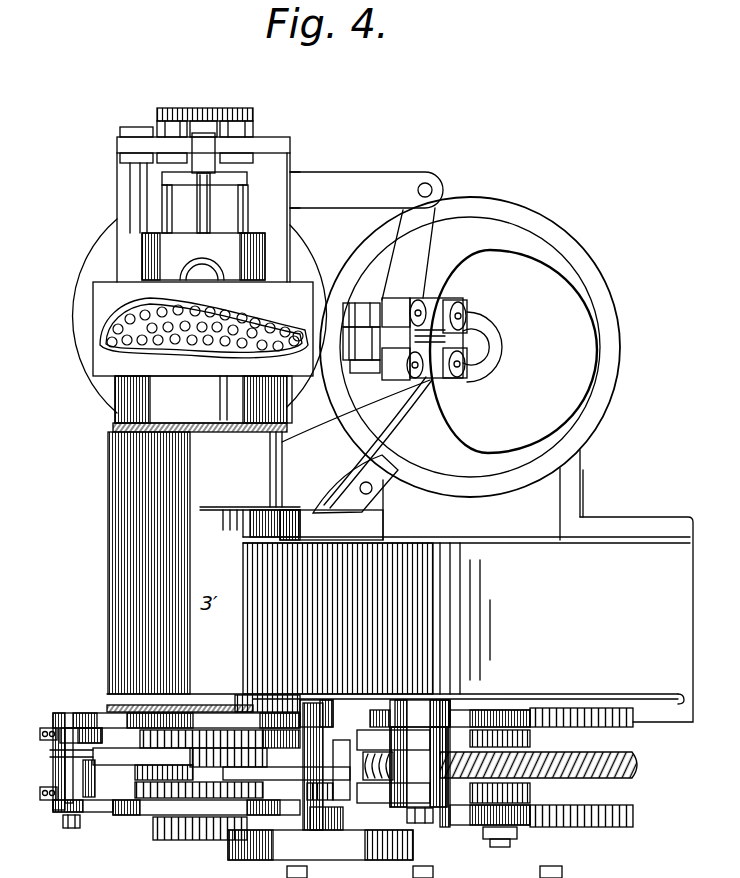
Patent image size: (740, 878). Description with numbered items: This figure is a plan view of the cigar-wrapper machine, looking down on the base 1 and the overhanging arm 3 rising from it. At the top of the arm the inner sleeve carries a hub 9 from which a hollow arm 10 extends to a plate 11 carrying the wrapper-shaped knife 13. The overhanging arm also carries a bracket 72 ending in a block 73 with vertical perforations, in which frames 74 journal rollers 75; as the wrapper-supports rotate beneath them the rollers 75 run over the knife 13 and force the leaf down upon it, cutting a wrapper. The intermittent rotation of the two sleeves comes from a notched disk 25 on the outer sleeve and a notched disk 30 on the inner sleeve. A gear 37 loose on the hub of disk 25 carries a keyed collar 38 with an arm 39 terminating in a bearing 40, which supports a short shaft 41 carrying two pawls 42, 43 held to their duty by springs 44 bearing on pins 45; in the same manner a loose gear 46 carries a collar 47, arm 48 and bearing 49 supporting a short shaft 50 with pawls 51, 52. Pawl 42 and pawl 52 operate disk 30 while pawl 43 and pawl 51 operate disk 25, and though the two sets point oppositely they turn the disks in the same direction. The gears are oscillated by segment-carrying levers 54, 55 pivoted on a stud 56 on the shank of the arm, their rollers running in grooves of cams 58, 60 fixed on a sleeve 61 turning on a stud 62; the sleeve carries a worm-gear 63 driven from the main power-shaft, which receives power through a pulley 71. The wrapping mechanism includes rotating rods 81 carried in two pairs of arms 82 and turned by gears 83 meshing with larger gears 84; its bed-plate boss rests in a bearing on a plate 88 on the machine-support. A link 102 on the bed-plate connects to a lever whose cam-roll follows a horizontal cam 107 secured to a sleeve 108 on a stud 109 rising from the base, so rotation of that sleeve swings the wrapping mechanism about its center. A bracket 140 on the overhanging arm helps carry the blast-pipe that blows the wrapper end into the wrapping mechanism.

The base 1 is at (690, 614).
The overhanging arm 3 is at (408, 545).
The hub 9 is at (252, 250).
The hollow arm 10 is at (200, 266).
The plate 11 is at (100, 364).
The knife 13 is at (232, 318).
The notched disk 25 is at (232, 720).
The notched disk 30 is at (185, 815).
The gear 37 is at (146, 740).
The collar 38 is at (180, 757).
The arm 39 is at (60, 756).
The bearing 40 is at (74, 761).
The short shaft 41 is at (74, 828).
The pawl 42 is at (95, 812).
The pawl 43 is at (80, 718).
The springs 44 is at (60, 733).
The pins 45 is at (97, 728).
The loose gear 46 is at (137, 790).
The collar 47 is at (137, 772).
The arm 48 is at (280, 775).
The bearing 49 is at (326, 766).
The short shaft 50 is at (335, 816).
The pawl 51 is at (345, 713).
The pawl 52 is at (323, 792).
The segment-carrying lever 54 is at (393, 739).
The segment-carrying lever 55 is at (393, 790).
The stud 56 is at (420, 824).
The cam 58 is at (605, 828).
The cam 60 is at (633, 725).
The sleeve 61 is at (528, 750).
The stud 62 is at (502, 848).
The worm-gear 63 is at (640, 765).
The pulley 71 is at (320, 845).
The bracket 72 is at (357, 445).
The block 73 is at (440, 318).
The frames 74 is at (372, 302).
The rollers 75 is at (352, 345).
The rotating rods 81 is at (160, 208).
The arms 82 is at (248, 182).
The gears 83 is at (180, 110).
The gears 84 is at (205, 108).
The plate 88 is at (100, 256).
The link 102 is at (366, 190).
The horizontal cam 107 is at (622, 350).
The sleeve 108 is at (508, 352).
The stud 109 is at (482, 340).
The bracket 140 is at (604, 875).